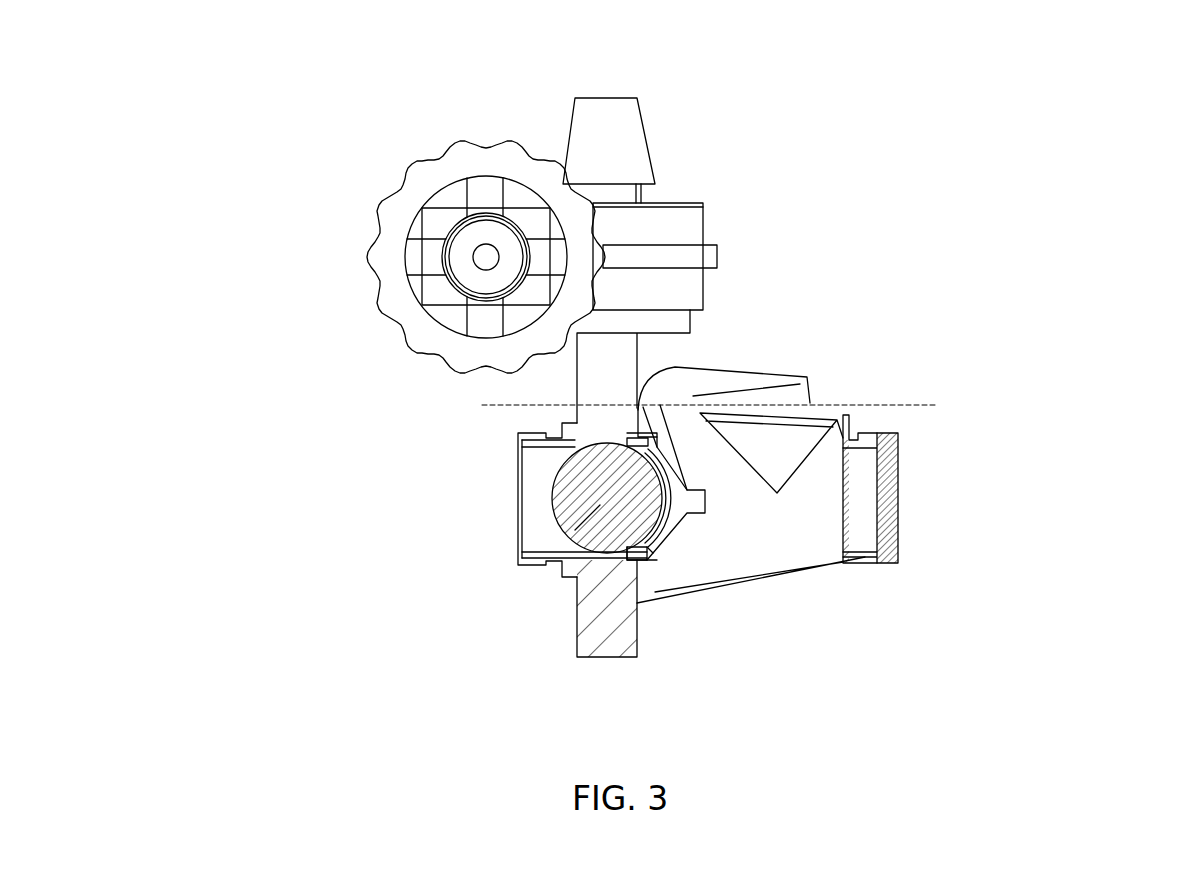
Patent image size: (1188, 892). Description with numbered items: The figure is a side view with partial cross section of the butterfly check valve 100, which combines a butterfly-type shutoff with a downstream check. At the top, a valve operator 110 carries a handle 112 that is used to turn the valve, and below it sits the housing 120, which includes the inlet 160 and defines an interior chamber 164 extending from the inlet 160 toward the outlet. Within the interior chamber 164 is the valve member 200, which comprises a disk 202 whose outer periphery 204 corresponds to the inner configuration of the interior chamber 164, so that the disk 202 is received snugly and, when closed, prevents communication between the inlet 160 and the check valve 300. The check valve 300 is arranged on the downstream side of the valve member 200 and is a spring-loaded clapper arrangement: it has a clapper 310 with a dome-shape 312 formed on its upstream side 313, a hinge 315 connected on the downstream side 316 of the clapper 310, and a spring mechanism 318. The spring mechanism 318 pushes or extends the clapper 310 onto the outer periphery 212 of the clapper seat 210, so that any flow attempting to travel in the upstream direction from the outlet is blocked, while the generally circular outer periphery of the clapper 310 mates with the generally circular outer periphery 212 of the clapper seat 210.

The butterfly check valve 100 is at (654, 392).
The valve operator 110 is at (663, 125).
The handle 112 is at (340, 190).
The housing 120 is at (898, 556).
The inlet 160 is at (592, 568).
The interior chamber 164 is at (827, 473).
The valve member 200 is at (492, 575).
The disk 202 is at (597, 527).
The outer periphery 204 is at (543, 468).
The clapper seat 210 is at (650, 568).
The outer periphery of the clapper seat 212 is at (667, 558).
The check valve 300 is at (691, 431).
The clapper 310 is at (707, 530).
The dome-shape 312 is at (652, 490).
The upstream side 313 is at (630, 523).
The hinge 315 is at (713, 460).
The downstream side 316 is at (733, 503).
The spring mechanism 318 is at (668, 388).